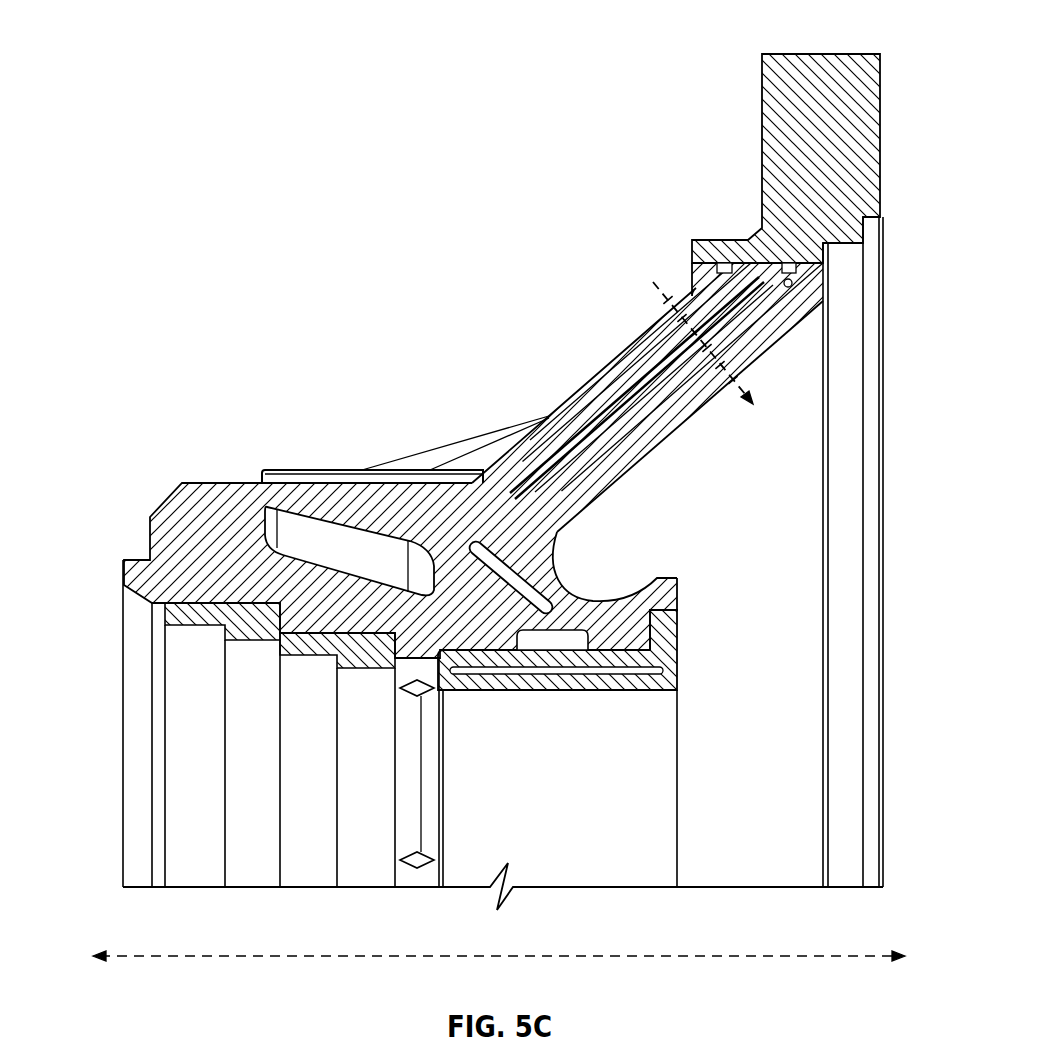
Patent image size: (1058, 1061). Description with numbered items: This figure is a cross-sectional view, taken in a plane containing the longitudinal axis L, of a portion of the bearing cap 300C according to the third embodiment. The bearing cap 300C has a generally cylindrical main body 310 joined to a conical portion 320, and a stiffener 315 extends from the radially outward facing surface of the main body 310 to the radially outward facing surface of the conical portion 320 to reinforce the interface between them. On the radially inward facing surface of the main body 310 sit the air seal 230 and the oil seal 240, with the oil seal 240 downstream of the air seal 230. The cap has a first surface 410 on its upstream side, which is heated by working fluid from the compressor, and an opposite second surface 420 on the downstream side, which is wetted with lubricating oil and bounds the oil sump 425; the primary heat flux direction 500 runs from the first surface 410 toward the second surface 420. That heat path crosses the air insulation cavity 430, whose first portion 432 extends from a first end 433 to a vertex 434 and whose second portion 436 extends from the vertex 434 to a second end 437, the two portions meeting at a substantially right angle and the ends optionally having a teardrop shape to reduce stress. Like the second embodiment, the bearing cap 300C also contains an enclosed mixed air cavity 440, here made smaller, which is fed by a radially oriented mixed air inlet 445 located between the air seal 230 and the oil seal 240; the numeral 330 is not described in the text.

The bearing cap 300C is at (279, 126).
The housing wall 330 is at (781, 100).
The first end 433 is at (792, 286).
The first portion 432 is at (765, 304).
The conical portion 320 is at (615, 385).
The primary heat flux direction 500 is at (668, 298).
The first surface 410 is at (575, 398).
The stiffener 315 is at (512, 438).
The air insulation cavity 430 is at (520, 498).
The vertex 434 is at (470, 460).
The main body 310 is at (397, 486).
The mixed air cavity 440 is at (345, 568).
The second surface 420 is at (645, 458).
The oil sump 425 is at (683, 537).
The second end 437 is at (550, 608).
The second portion 436 is at (478, 548).
The air seal 230 is at (262, 862).
The mixed air inlet 445 is at (421, 700).
The oil seal 240 is at (593, 862).
The longitudinal axis L is at (207, 957).